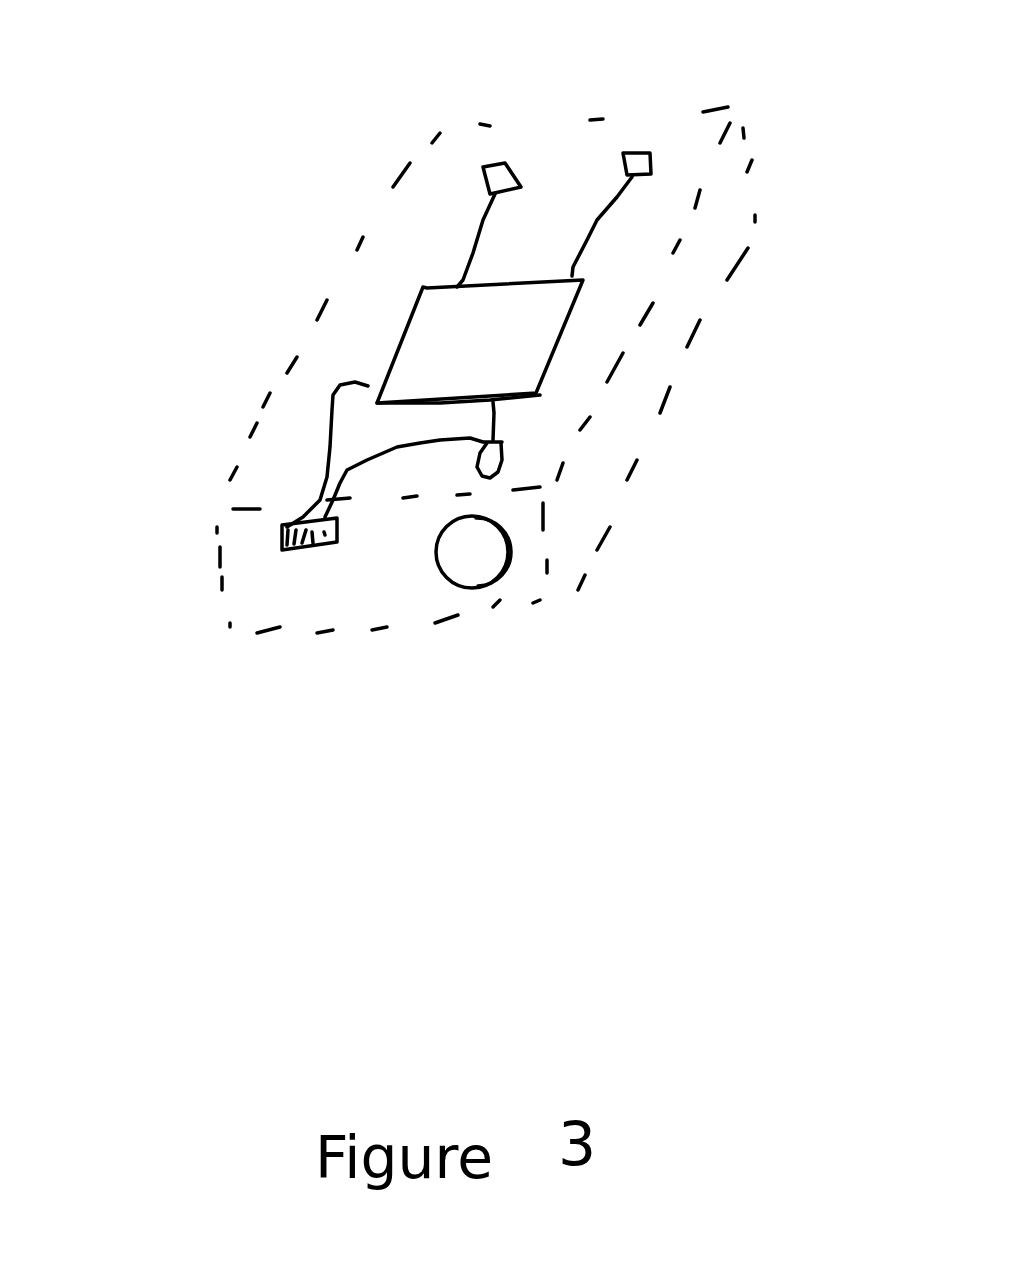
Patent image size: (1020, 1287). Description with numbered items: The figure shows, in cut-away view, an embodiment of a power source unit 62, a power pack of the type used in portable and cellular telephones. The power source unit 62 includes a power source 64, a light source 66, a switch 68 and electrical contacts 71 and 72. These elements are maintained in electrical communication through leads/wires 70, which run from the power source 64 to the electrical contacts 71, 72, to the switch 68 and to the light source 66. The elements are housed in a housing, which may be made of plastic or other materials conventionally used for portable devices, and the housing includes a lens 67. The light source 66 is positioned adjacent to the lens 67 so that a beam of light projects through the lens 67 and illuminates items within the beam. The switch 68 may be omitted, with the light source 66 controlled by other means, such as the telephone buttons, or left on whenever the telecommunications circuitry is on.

The power source unit 62 is at (753, 190).
The power source 64 is at (532, 338).
The light source 66 is at (490, 457).
The lens 67 is at (477, 557).
The switch 68 is at (310, 550).
The leads/wires 70 is at (477, 228).
The electrical contact 71 is at (513, 163).
The electrical contact 72 is at (642, 150).